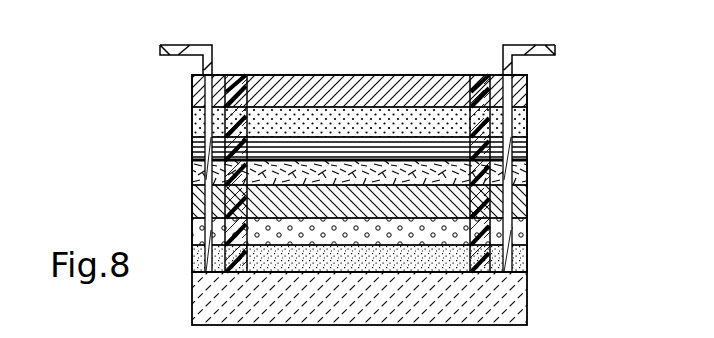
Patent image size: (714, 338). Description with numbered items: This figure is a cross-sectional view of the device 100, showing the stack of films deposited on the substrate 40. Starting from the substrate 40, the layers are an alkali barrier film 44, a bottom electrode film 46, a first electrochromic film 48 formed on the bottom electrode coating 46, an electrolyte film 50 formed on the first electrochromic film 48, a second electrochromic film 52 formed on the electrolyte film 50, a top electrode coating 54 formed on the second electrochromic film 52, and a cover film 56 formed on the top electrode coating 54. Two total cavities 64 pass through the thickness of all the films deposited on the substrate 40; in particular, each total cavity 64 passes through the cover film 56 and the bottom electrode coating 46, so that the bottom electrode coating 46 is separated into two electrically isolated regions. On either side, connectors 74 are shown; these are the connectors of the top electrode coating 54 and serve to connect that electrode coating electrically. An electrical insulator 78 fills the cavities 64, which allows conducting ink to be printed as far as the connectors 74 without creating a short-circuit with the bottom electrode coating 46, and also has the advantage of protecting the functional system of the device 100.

The device 100 is at (130, 153).
The substrate 40 is at (527, 300).
The alkali barrier film 44 is at (527, 258).
The bottom electrode film 46 is at (527, 231).
The first electrochromic film 48 is at (527, 206).
The electrolyte film 50 is at (527, 175).
The second electrochromic film 52 is at (527, 152).
The top electrode coating 54 is at (527, 126).
The cover film 56 is at (527, 90).
The total cavity 64 is at (238, 84).
The connector 74 is at (183, 45).
The electrical insulator 78 is at (236, 80).